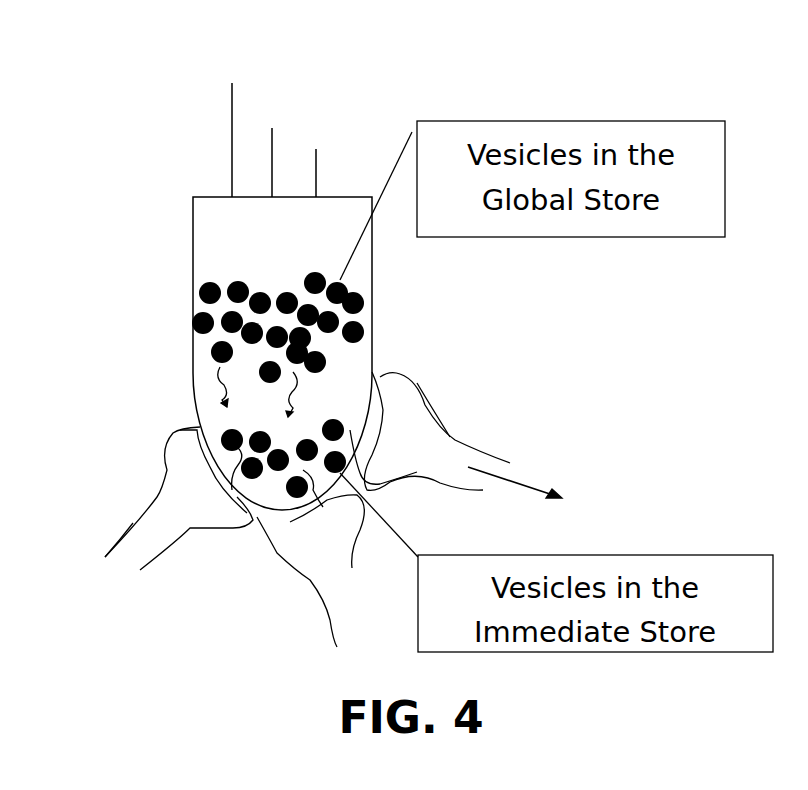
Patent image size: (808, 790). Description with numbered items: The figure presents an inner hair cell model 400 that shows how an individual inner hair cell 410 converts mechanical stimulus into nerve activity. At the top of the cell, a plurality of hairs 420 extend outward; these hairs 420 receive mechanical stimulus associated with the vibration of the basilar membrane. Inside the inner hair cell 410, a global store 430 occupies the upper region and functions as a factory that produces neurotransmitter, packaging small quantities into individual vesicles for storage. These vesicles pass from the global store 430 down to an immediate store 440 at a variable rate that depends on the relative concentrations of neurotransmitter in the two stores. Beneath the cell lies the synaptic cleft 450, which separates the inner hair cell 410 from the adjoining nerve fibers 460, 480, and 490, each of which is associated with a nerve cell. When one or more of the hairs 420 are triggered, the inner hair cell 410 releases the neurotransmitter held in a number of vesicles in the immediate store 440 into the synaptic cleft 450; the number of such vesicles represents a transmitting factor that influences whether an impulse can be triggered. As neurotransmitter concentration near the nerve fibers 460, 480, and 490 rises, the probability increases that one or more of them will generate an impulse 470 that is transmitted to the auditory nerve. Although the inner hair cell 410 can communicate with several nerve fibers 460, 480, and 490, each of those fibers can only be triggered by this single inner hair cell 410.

The inner hair cell model 400 is at (80, 160).
The inner hair cell 410 is at (192, 260).
The hairs 420 is at (312, 131).
The global store 430 is at (366, 286).
The immediate store 440 is at (217, 422).
The synaptic cleft 450 is at (377, 405).
The nerve fiber 460 is at (443, 452).
The impulse 470 is at (523, 483).
The nerve fiber 480 is at (330, 583).
The nerve fiber 490 is at (158, 522).